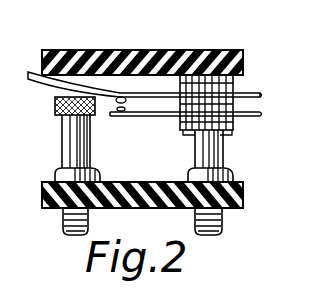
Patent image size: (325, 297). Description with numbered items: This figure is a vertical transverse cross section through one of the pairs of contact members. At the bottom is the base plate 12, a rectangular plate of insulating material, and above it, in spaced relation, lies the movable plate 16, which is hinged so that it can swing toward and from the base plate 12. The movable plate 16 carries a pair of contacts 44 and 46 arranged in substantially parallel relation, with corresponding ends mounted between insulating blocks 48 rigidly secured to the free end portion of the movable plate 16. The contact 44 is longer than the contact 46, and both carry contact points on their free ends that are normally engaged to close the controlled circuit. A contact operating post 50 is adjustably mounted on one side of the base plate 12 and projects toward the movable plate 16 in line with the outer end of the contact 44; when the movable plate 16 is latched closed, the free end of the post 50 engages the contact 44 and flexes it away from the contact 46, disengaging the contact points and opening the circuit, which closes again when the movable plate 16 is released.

The base plate 12 is at (238, 207).
The movable plate 16 is at (76, 56).
The contact 44 is at (118, 92).
The contact 46 is at (117, 113).
The insulating blocks 48 is at (262, 92).
The contact operating post 50 is at (90, 162).